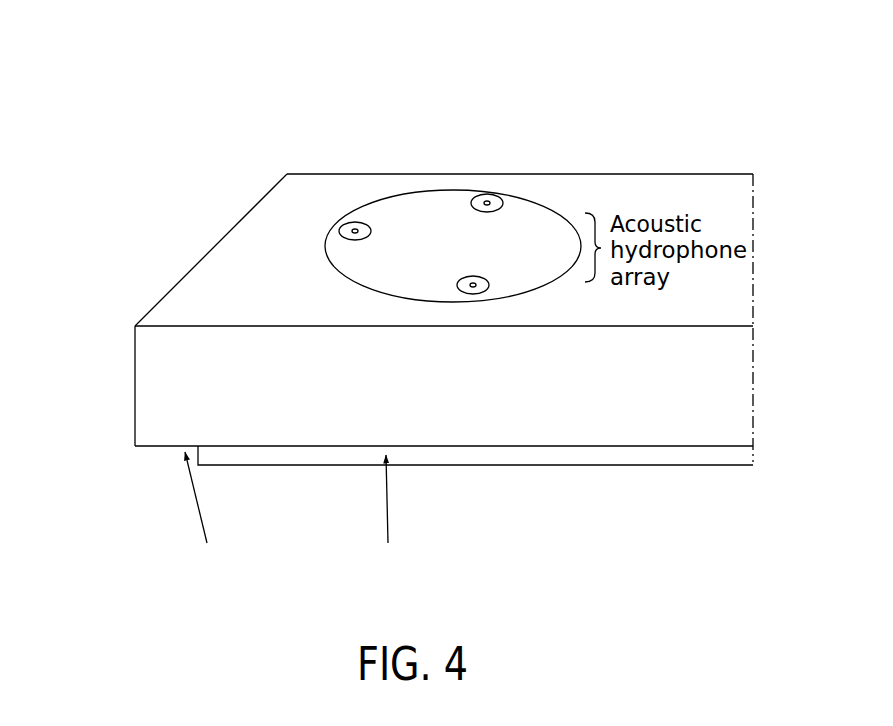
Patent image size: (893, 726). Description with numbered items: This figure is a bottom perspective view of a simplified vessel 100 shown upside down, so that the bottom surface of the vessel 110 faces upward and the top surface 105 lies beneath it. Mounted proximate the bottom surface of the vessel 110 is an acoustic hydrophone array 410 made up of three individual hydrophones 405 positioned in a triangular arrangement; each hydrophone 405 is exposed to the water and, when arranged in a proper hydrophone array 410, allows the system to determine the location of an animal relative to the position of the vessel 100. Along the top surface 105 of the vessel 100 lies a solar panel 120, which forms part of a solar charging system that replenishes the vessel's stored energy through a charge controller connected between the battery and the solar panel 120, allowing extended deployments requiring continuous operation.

The vessel 100 is at (143, 105).
The top surface 105 is at (157, 448).
The bottom surface of the vessel 110 is at (607, 197).
The solar panel 120 is at (502, 457).
The hydrophone 405 is at (345, 222).
The hydrophone array 410 is at (453, 267).